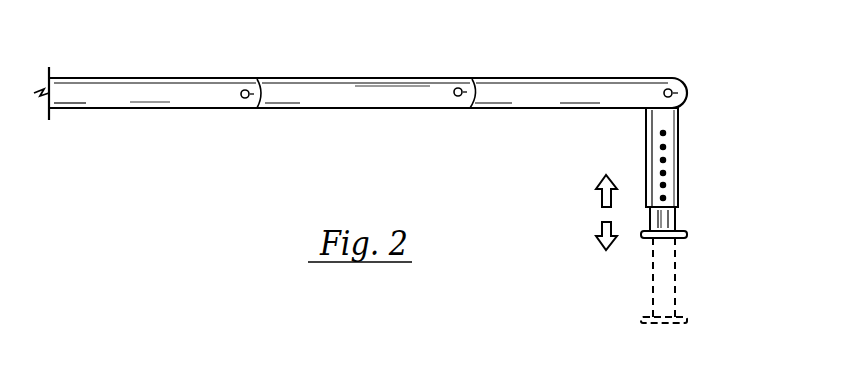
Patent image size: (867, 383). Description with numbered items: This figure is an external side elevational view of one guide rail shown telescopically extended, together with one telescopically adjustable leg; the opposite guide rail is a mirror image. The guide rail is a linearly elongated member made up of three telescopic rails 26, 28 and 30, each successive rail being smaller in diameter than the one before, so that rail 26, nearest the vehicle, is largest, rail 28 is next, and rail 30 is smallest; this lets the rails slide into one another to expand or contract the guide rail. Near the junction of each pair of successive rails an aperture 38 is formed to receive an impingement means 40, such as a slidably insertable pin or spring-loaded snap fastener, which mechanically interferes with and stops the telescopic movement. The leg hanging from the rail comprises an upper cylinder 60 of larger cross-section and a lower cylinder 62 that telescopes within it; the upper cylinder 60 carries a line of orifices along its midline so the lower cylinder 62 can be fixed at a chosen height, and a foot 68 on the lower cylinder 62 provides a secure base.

The telescopic rail 26 is at (155, 78).
The telescopic rail 28 is at (333, 78).
The telescopic rail 30 is at (583, 78).
The aperture 38 is at (453, 89).
The impingement means 40 is at (475, 88).
The upper cylinder 60 is at (647, 147).
The lower cylinder 62 is at (676, 261).
The foot 68 is at (668, 324).